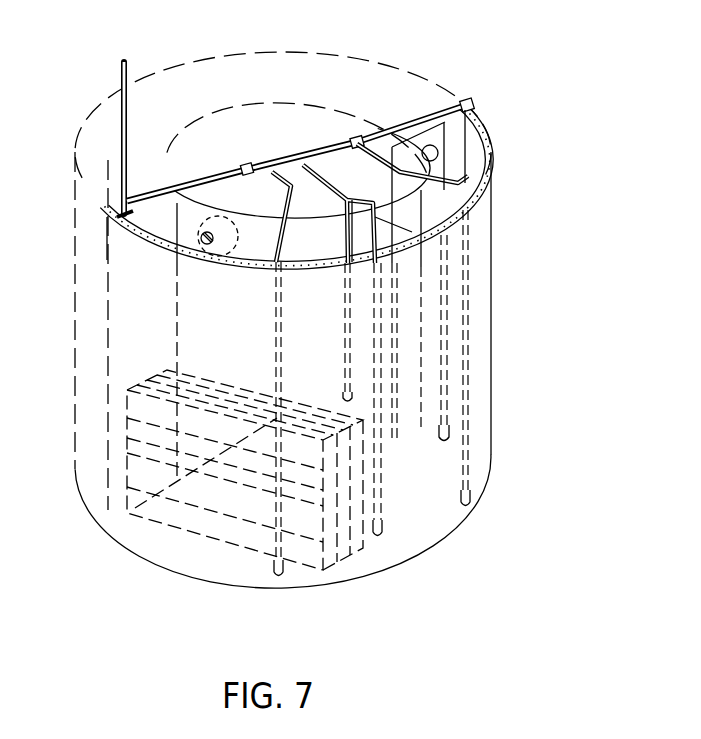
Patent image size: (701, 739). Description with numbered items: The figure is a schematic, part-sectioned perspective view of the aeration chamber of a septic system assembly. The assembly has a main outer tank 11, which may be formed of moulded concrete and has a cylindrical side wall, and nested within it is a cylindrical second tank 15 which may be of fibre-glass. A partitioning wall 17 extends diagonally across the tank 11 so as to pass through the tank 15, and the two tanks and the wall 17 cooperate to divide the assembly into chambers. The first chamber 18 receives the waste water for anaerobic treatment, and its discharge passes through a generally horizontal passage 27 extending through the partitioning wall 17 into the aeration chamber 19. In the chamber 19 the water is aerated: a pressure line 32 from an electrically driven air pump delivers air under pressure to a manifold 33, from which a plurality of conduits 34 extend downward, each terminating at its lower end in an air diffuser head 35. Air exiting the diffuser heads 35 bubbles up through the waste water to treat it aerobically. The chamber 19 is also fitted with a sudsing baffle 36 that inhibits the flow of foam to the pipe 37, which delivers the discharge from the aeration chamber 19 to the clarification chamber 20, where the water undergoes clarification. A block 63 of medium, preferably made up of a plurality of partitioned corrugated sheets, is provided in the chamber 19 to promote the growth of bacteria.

The main outer tank 11 is at (117, 310).
The second tank 15 is at (271, 243).
The partitioning wall 17 is at (158, 190).
The first chamber 18 is at (429, 107).
The aeration chamber 19 is at (399, 158).
The clarification chamber 20 is at (303, 188).
The passage 27 is at (470, 102).
The pressure line 32 is at (123, 68).
The manifold 33 is at (358, 140).
The conduits 34 is at (281, 330).
The air diffuser head 35 is at (449, 441).
The sudsing baffle 36 is at (403, 226).
The pipe 37 is at (200, 238).
The block of medium 63 is at (144, 517).